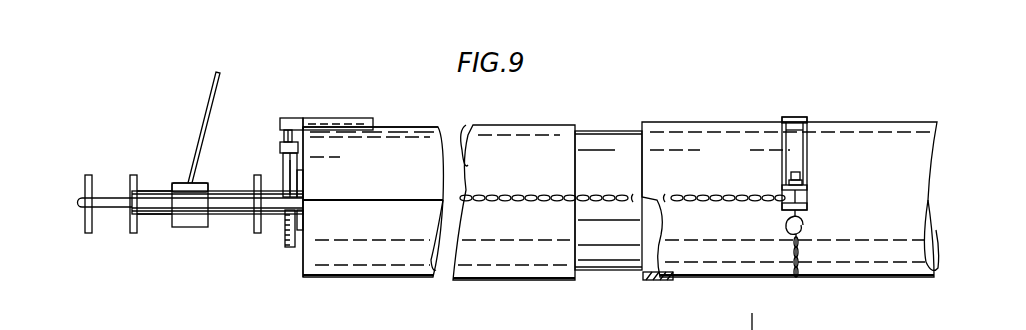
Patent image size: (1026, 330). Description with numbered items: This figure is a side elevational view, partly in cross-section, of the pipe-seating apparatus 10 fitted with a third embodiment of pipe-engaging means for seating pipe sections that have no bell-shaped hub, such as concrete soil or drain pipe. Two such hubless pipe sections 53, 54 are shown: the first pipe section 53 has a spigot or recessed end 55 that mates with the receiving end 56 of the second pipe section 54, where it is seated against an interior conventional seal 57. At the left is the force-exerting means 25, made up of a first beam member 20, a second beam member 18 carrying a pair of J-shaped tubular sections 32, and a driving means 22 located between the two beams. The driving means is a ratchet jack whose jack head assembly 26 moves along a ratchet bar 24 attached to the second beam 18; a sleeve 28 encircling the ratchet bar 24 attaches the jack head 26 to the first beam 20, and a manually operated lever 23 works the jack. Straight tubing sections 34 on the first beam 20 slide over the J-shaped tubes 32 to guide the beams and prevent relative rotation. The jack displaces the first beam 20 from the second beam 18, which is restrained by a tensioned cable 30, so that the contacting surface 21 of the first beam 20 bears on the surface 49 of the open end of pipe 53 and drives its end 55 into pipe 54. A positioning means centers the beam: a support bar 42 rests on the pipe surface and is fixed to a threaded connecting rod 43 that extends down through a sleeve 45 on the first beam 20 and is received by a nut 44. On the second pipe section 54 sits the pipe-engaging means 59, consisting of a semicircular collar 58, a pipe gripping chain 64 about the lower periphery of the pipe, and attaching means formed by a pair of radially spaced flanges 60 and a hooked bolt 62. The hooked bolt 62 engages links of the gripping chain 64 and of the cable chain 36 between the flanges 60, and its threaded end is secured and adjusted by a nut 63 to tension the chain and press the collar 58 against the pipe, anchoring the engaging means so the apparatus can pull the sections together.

The pipe-seating apparatus 10 is at (112, 156).
The second beam member 18 is at (87, 234).
The first beam member 20 is at (257, 236).
The contacting surface 21 is at (305, 187).
The driving means 22 is at (202, 178).
The manually operated lever 23 is at (213, 80).
The ratchet bar 24 is at (152, 220).
The force-exerting means 25 is at (153, 176).
The jack head assembly 26 is at (187, 228).
The sleeve 28 is at (233, 190).
The tensioned cable 30 is at (420, 197).
The J-shaped tubular sections 32 is at (75, 203).
The straight tubing sections 34 is at (227, 217).
The cable chain 36 is at (525, 202).
The support bar 42 is at (330, 118).
The connecting rod 43 is at (280, 140).
The nut 44 is at (296, 138).
The sleeve 45 is at (290, 167).
The surface of open end of pipe 49 is at (302, 270).
The first pipe section 53 is at (397, 127).
The second pipe section 54 is at (755, 118).
The spigot end 55 is at (605, 130).
The receiving end 56 is at (682, 120).
The interior seal 57 is at (672, 278).
The semicircular collar 58 is at (800, 148).
The pipe-engaging means 59 is at (805, 108).
The flanges 60 is at (803, 203).
The hooked bolt 62 is at (800, 218).
The nut 63 is at (800, 178).
The pipe gripping chain 64 is at (812, 270).